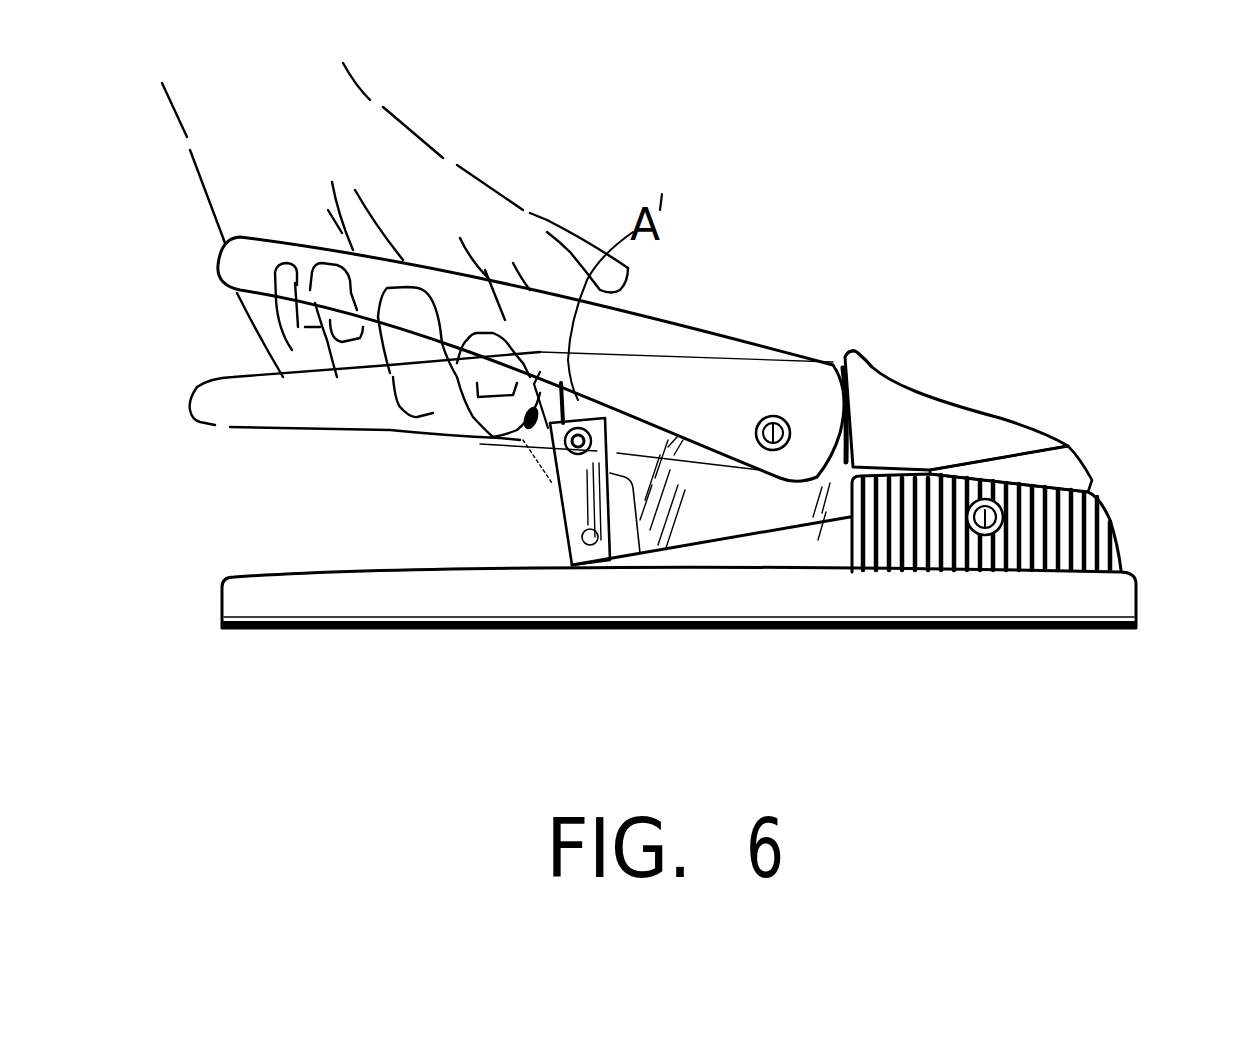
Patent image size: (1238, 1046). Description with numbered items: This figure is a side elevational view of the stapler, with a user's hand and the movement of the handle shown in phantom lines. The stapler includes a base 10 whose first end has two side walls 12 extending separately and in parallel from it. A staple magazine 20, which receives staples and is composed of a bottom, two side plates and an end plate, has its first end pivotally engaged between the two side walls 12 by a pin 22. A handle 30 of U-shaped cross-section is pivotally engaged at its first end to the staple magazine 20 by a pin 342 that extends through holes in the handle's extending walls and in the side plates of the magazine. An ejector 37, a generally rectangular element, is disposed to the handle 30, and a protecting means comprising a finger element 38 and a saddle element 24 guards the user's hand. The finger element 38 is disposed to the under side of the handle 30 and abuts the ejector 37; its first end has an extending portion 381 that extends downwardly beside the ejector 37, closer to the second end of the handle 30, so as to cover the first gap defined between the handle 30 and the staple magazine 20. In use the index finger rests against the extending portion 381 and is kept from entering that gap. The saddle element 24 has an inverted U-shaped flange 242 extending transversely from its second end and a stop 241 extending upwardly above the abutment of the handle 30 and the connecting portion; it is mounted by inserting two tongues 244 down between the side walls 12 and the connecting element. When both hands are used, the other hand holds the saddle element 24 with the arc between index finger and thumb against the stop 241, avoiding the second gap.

The base 10 is at (478, 620).
The side walls 12 is at (1113, 543).
The staple magazine 20 is at (731, 538).
The pin 22 is at (983, 535).
The saddle element 24 is at (983, 427).
The stop 241 is at (872, 367).
The inverted U-shaped flange 242 is at (834, 457).
The tongues 244 is at (1083, 462).
The handle 30 is at (729, 308).
The pin 342 is at (773, 410).
The ejector 37 is at (592, 403).
The finger element 38 is at (520, 440).
The extending portion 381 is at (533, 413).